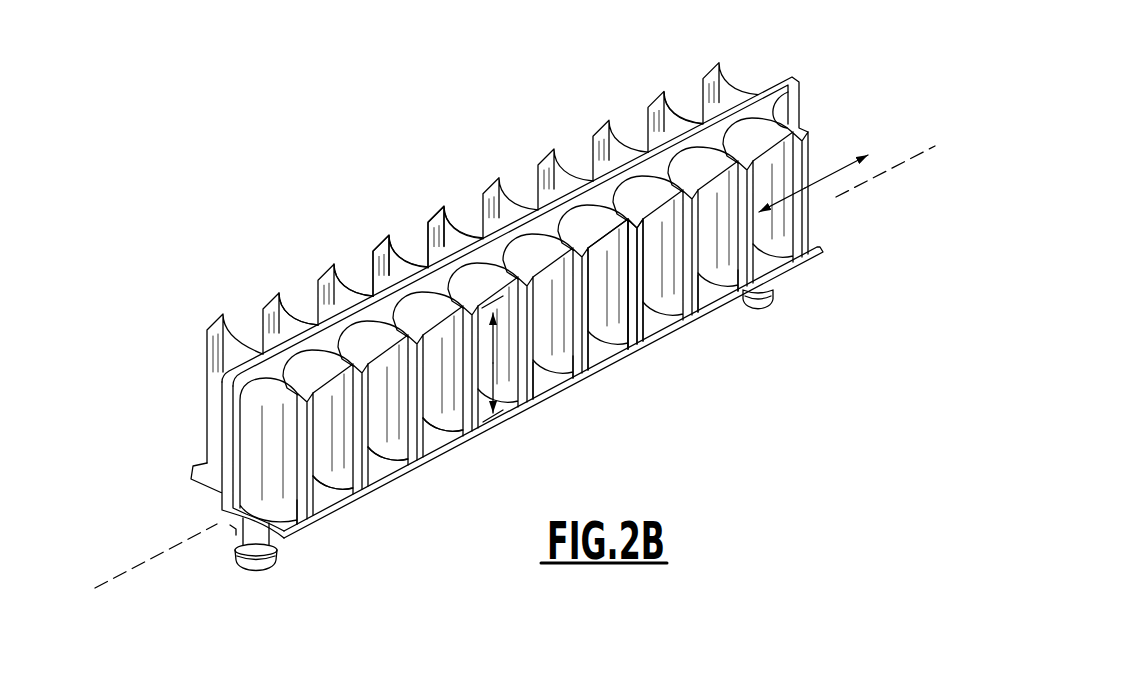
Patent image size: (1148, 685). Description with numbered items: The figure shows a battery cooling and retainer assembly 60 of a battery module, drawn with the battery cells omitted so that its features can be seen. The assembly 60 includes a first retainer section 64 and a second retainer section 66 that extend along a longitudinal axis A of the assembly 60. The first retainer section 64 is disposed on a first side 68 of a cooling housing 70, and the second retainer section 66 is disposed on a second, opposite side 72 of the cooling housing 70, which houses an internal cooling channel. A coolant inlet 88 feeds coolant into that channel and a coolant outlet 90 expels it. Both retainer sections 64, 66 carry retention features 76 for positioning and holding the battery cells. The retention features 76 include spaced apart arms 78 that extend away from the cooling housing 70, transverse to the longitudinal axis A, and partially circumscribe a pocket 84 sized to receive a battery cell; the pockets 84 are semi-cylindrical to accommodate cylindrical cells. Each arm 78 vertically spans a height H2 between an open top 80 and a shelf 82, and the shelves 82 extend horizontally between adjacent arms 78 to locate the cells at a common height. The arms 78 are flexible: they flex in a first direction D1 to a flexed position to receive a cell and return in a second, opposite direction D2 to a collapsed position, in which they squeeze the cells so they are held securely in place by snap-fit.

The battery cooling and retainer assembly 60 is at (763, 80).
The first retainer section 64 is at (568, 146).
The second retainer section 66 is at (599, 318).
The first side 68 is at (380, 198).
The cooling housing 70 is at (457, 264).
The second side 72 is at (482, 504).
The retention features 76 is at (343, 262).
The spaced apart arms 78 is at (660, 104).
The open top 80 is at (411, 245).
The shelf 82 is at (320, 505).
The pocket 84 is at (299, 386).
The coolant inlet 88 is at (247, 558).
The coolant outlet 90 is at (773, 309).
The height of the spaced apart arms H2 is at (497, 356).
The first direction D1 is at (856, 185).
The second direction D2 is at (784, 272).
The longitudinal axis A is at (150, 556).